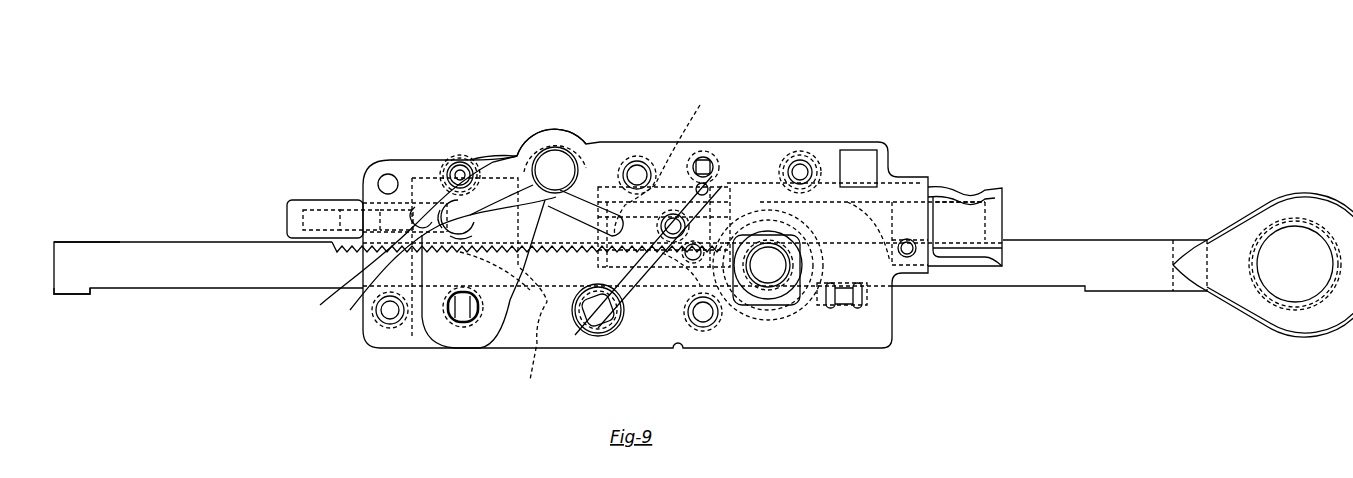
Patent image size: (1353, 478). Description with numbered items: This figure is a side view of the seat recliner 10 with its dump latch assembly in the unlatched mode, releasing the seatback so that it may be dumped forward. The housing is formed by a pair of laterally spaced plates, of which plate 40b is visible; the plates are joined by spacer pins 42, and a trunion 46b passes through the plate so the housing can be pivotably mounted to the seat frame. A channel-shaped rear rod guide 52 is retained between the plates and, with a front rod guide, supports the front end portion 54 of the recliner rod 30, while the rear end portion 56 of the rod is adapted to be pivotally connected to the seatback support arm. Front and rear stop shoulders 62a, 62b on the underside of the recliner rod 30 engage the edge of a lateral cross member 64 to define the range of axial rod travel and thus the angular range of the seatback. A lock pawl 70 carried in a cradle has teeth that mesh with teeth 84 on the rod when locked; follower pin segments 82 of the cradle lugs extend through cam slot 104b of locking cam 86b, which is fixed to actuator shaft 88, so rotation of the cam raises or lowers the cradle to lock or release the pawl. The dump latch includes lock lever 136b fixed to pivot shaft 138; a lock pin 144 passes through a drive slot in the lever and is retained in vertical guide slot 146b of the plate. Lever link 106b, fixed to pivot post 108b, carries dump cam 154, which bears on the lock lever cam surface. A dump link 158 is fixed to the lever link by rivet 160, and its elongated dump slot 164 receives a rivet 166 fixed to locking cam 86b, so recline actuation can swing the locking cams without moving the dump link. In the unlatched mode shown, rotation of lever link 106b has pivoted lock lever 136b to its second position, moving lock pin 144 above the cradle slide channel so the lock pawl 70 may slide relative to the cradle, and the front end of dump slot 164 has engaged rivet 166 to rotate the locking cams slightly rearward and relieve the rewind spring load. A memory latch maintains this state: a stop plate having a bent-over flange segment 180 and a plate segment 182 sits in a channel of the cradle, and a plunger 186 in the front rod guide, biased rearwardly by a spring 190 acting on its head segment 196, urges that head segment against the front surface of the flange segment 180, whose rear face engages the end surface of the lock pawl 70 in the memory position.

The seat recliner 10 is at (958, 102).
The recliner rod 30 is at (103, 240).
The plate 40b is at (900, 322).
The spacer pins 42 is at (802, 170).
The trunion 46b is at (772, 272).
The rear rod guide 52 is at (984, 190).
The front end portion 54 is at (160, 250).
The rear end portion 56 is at (1288, 212).
The front stop shoulder 62a is at (95, 289).
The rear stop shoulder 62b is at (1085, 291).
The lateral cross member 64 is at (848, 308).
The lock pawl 70 is at (765, 320).
The follower pin segment 82 is at (470, 248).
The teeth 84 is at (360, 215).
The locking cam 86b is at (470, 340).
The actuator shaft 88 is at (462, 318).
The cam slot 104b is at (433, 203).
The lever link 106b is at (655, 310).
The pivot post 108b is at (600, 314).
The lock lever 136b is at (657, 158).
The pivot shaft 138 is at (706, 160).
The lock pin 144 is at (556, 158).
The vertical guide slot 146b is at (560, 235).
The dump cam 154 is at (528, 336).
The dump link 158 is at (476, 155).
The rivet 160 is at (681, 221).
The dump slot 164 is at (627, 172).
The rivet 166 is at (460, 160).
The flange segment 180 is at (373, 277).
The plate segment 182 is at (523, 180).
The plunger 186 is at (313, 214).
The spring 190 is at (372, 217).
The head segment 196 is at (355, 287).